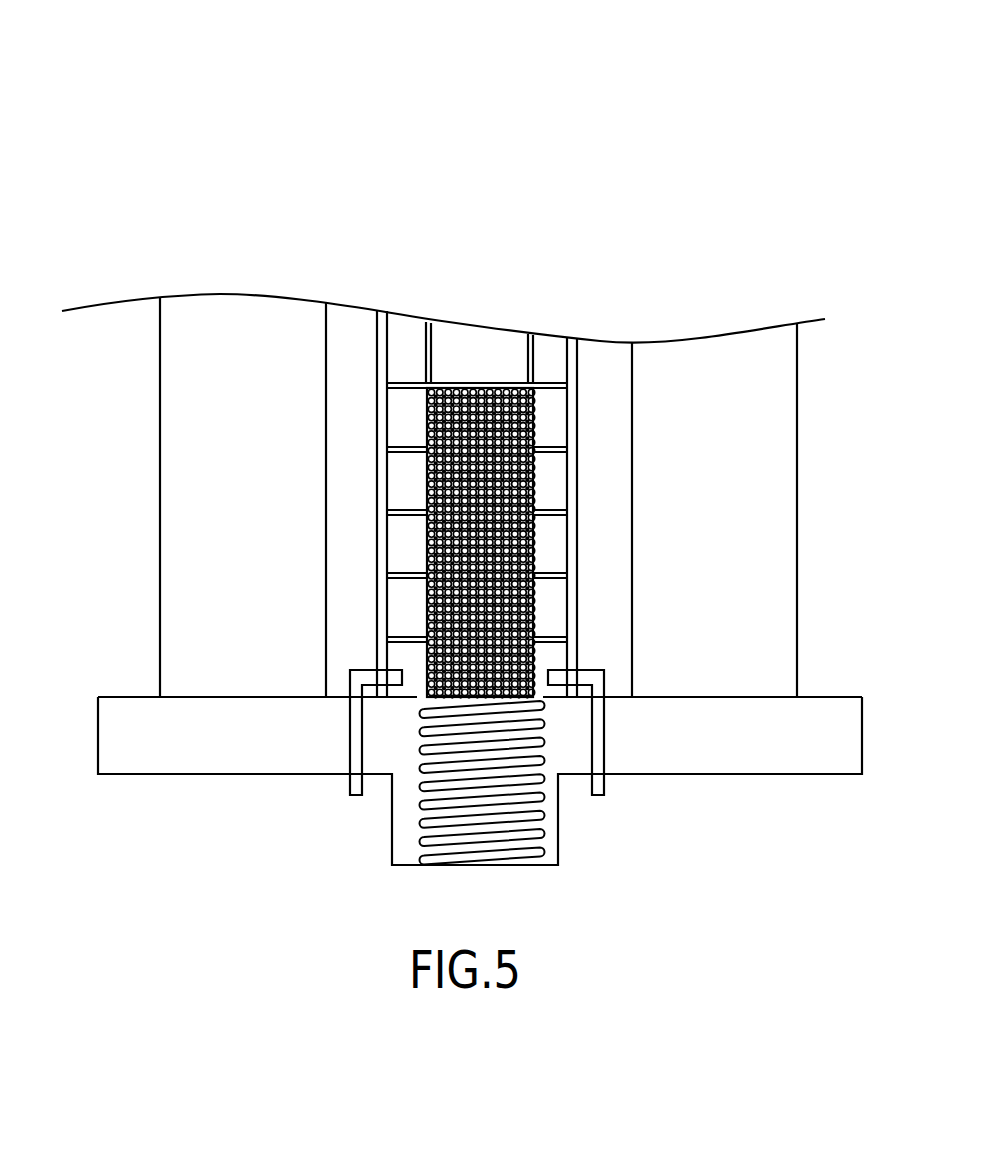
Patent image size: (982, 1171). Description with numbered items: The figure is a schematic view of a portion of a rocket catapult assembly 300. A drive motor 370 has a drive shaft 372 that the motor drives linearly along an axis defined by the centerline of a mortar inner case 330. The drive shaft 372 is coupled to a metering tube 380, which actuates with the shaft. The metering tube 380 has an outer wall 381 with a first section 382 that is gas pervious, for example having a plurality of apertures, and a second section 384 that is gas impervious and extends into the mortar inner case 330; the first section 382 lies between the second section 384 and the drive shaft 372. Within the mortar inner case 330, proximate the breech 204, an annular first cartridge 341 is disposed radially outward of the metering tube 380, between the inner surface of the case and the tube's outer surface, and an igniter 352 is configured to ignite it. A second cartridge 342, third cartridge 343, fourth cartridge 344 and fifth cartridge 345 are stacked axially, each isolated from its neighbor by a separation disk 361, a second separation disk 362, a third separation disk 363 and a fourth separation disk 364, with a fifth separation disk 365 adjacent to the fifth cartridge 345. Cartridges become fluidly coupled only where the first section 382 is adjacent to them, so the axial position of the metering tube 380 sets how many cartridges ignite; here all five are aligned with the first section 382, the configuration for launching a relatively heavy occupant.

The rocket catapult assembly 300 is at (648, 86).
The breech 204 is at (244, 750).
The mortar inner case 330 is at (380, 372).
The first cartridge 341 is at (410, 650).
The second cartridge 342 is at (415, 598).
The third cartridge 343 is at (412, 546).
The fourth cartridge 344 is at (412, 475).
The fifth cartridge 345 is at (407, 422).
The igniter 352 is at (352, 740).
The separation disk 361 is at (555, 642).
The second separation disk 362 is at (560, 580).
The third separation disk 363 is at (548, 517).
The fourth separation disk 364 is at (548, 453).
The fifth separation disk 365 is at (548, 392).
The drive motor 370 is at (440, 813).
The drive shaft 372 is at (463, 830).
The metering tube 380 is at (533, 300).
The outer wall 381 is at (533, 356).
The first section 382 is at (399, 481).
The second section 384 is at (425, 342).